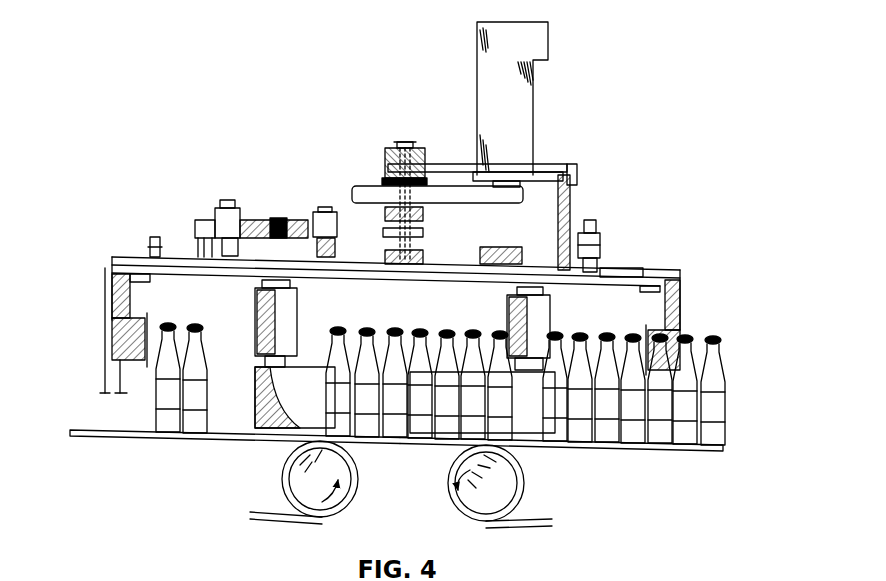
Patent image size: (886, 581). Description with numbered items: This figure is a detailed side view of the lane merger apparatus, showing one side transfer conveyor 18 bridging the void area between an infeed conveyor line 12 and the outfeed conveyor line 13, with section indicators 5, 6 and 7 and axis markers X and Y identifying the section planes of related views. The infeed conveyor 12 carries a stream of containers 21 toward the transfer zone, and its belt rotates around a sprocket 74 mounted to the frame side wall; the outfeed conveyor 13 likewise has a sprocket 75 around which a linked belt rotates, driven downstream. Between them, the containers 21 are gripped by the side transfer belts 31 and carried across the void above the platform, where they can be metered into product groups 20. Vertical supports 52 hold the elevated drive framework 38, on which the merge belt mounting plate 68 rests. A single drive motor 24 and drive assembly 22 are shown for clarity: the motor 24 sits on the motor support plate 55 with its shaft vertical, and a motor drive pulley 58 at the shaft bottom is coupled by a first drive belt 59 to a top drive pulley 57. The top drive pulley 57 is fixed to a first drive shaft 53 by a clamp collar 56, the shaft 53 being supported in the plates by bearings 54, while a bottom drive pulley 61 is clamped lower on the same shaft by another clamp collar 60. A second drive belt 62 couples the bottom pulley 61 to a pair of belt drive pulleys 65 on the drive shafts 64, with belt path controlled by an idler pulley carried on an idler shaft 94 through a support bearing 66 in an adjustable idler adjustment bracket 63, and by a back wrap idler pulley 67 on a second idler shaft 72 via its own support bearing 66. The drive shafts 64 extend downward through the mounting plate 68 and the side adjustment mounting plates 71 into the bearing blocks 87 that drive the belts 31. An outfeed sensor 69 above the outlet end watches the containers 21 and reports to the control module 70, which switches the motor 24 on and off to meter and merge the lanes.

The infeed conveyor line 12 is at (672, 452).
The outfeed conveyor line 13 is at (145, 440).
The side transfer conveyor 18 is at (423, 480).
The product group 20 is at (146, 405).
The container 21 is at (718, 432).
The drive assembly 22 is at (310, 66).
The drive motor 24 is at (488, 68).
The belt 31 is at (312, 397).
The drive framework 38 is at (112, 340).
The vertical support 52 is at (100, 385).
The first drive shaft 53 is at (405, 141).
The bearing 54 is at (388, 155).
The motor support plate 55 is at (447, 164).
The clamp collar 56 is at (382, 181).
The top drive pulley 57 is at (352, 193).
The motor drive pulley 58 is at (512, 205).
The first drive belt 59 is at (478, 204).
The clamp collar 60 is at (423, 213).
The bottom drive pulley 61 is at (423, 238).
The second drive belt 62 is at (348, 240).
The idler adjustment bracket 63 is at (328, 260).
The drive shaft 64 is at (250, 265).
The belt drive pulley 65 is at (257, 220).
The support bearing 66 is at (228, 205).
The back wrap idler pulley 67 is at (208, 220).
The merge belt mounting plate 68 is at (620, 268).
The outfeed sensor 69 is at (155, 237).
The control module 70 is at (495, 265).
The side adjustment mounting plate 71 is at (138, 274).
The idler shaft 72 is at (220, 262).
The sprocket 74 is at (595, 222).
The sprocket 75 is at (290, 470).
The bearing block 87 is at (297, 328).
The idler shaft 94 is at (279, 218).
The section line 5- 5 is at (253, 367).
The section line 6- 6 is at (112, 99).
The section line 7- 7 is at (407, 335).
The axis X is at (112, 257).
The axis Y is at (112, 268).